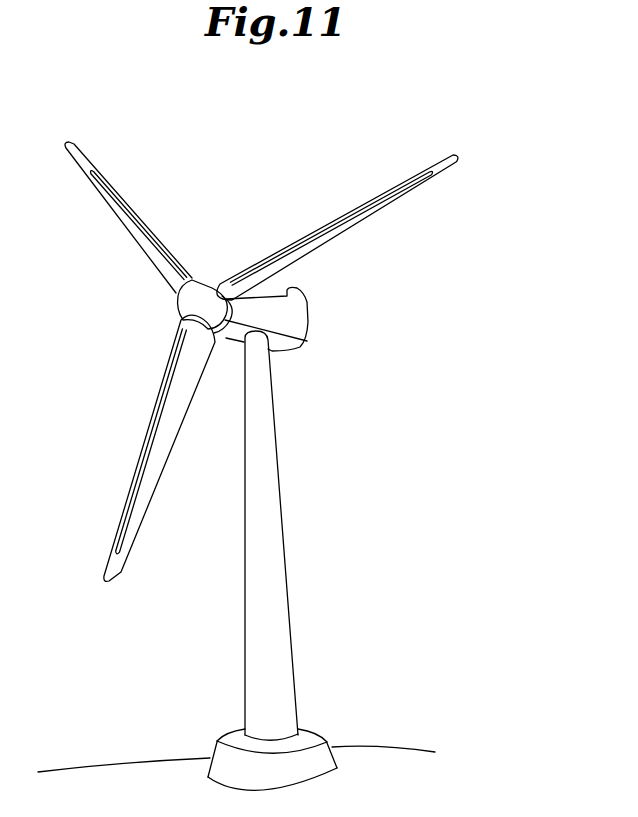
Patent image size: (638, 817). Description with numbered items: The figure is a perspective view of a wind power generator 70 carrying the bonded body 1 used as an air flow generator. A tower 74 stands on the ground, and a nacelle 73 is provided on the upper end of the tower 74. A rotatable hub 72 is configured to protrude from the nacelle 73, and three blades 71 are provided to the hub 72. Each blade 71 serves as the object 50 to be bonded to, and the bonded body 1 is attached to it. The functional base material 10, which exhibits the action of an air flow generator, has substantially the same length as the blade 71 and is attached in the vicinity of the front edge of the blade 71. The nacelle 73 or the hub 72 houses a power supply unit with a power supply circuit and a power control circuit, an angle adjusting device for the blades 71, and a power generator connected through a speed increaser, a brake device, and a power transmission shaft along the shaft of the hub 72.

The bonded body 1 is at (142, 213).
The functional base material 10 is at (157, 446).
The object to be bonded to 50 is at (180, 413).
The wind power generator 70 is at (320, 289).
The blade 71 is at (372, 211).
The hub 72 is at (186, 303).
The nacelle 73 is at (299, 325).
The tower 74 is at (262, 578).